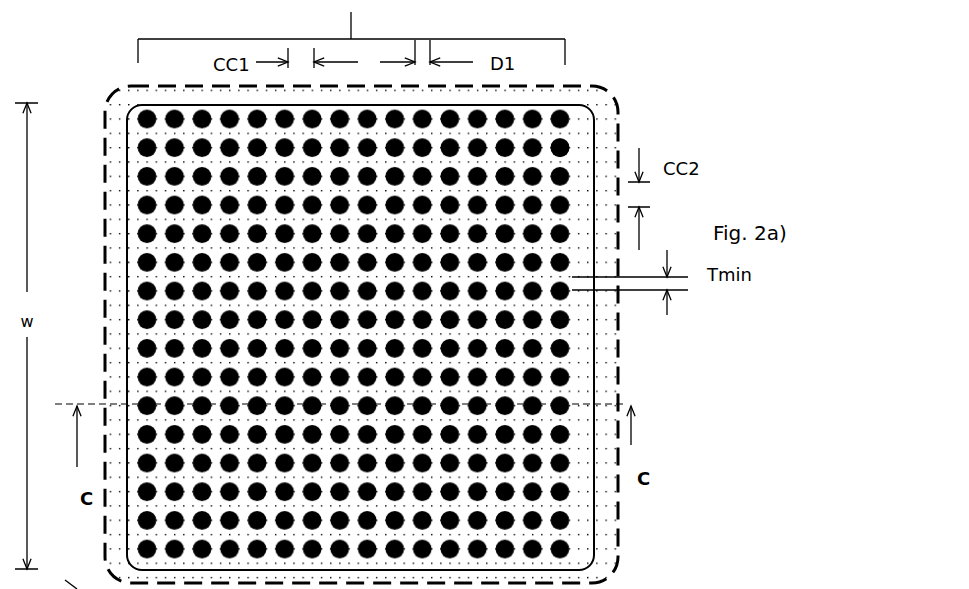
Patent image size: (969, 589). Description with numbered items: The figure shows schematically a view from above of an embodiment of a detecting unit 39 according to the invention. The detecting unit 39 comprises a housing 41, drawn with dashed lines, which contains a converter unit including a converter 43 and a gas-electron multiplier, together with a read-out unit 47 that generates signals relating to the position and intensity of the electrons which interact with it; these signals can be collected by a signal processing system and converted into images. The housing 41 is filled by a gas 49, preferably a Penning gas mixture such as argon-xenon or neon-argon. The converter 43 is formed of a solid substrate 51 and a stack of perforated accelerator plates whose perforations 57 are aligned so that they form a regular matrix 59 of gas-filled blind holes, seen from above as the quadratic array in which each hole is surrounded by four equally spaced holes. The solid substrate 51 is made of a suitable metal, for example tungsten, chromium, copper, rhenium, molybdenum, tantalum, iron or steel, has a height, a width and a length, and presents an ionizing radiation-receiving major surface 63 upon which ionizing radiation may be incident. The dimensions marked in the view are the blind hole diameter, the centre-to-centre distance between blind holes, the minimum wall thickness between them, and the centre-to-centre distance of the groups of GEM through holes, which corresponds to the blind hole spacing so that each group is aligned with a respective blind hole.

The detecting unit 39 is at (723, 402).
The housing 41 is at (105, 548).
The converter 43 is at (583, 395).
The read-out unit 47 is at (808, 522).
The gas 49 is at (608, 543).
The solid substrate 51 is at (628, 588).
The perforations 57 is at (572, 145).
The regular matrix 59 is at (351, 35).
The ionizing radiation-receiving major surface 63 is at (603, 588).